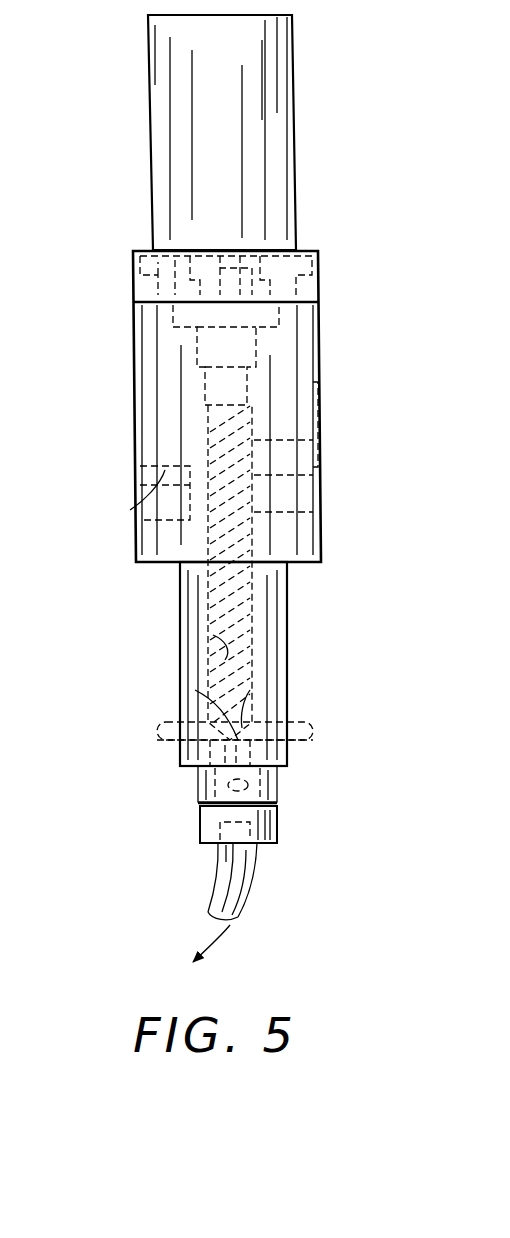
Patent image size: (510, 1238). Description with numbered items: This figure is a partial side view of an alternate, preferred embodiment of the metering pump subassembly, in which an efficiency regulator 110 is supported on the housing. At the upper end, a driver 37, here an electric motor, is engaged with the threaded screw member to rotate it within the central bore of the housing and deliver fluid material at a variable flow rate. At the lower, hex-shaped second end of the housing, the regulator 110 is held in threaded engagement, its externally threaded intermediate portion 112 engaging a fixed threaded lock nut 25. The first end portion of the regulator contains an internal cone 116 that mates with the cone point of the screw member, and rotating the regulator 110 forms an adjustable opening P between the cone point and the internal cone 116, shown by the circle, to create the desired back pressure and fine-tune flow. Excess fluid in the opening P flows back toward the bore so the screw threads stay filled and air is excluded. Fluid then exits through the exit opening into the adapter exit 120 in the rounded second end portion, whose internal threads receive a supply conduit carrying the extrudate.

The driver 37 is at (305, 152).
The internal cone 116 is at (250, 690).
The opening P is at (313, 730).
The threaded lock nut 25 is at (200, 782).
The intermediate portion 112 is at (200, 795).
The efficiency regulator 110 is at (280, 828).
The adapter exit 120 is at (212, 862).